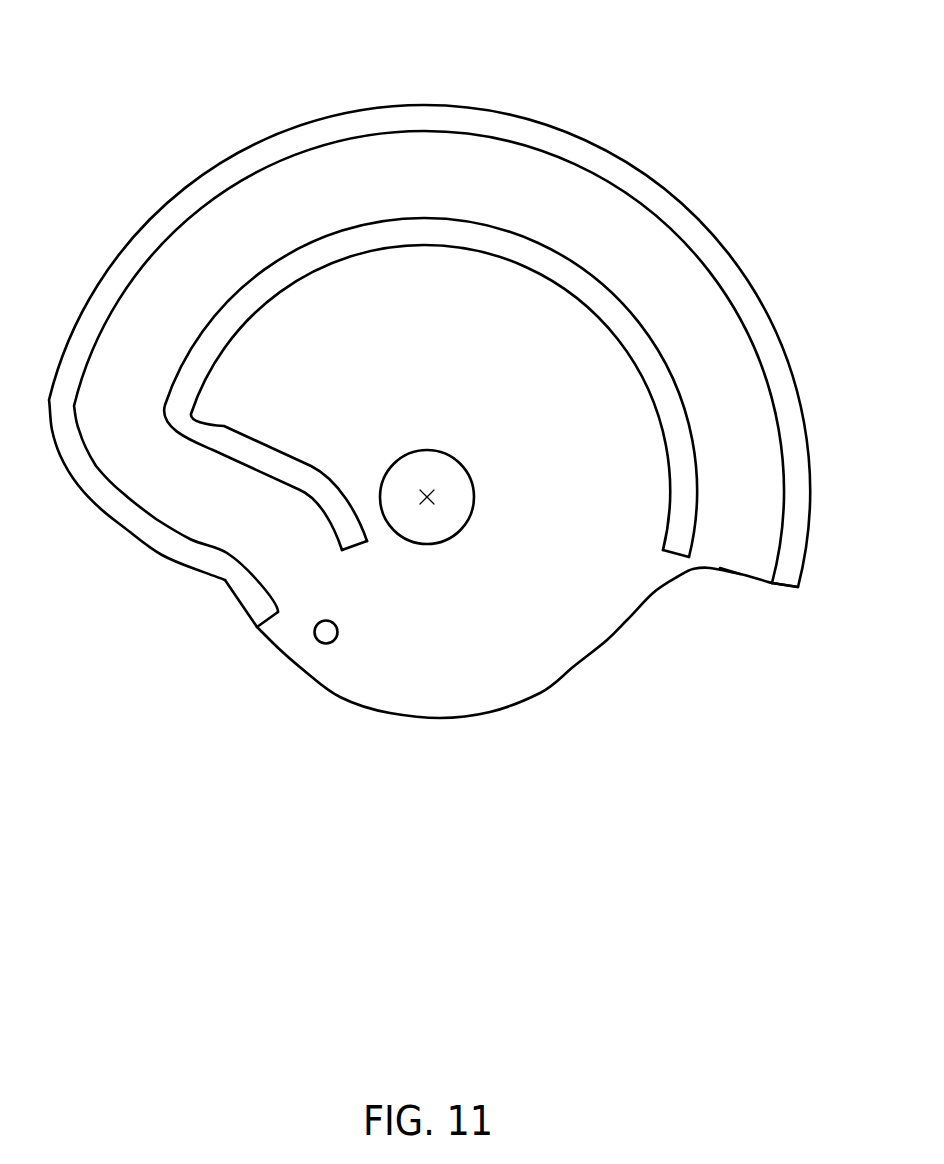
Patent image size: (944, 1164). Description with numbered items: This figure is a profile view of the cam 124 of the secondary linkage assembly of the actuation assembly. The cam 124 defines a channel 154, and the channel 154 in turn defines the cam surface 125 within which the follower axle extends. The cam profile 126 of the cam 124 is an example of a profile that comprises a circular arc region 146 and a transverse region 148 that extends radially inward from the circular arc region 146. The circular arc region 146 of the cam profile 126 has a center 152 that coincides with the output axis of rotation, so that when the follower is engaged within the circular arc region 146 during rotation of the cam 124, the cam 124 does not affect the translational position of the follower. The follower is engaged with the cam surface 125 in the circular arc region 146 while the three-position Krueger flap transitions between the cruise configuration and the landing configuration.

The cam 124 is at (462, 389).
The cam surface 125 is at (757, 456).
The cam profile 126 is at (703, 325).
The circular arc region 146 is at (483, 133).
The transverse region 148 is at (182, 537).
The center 152 is at (433, 498).
The channel 154 is at (742, 535).